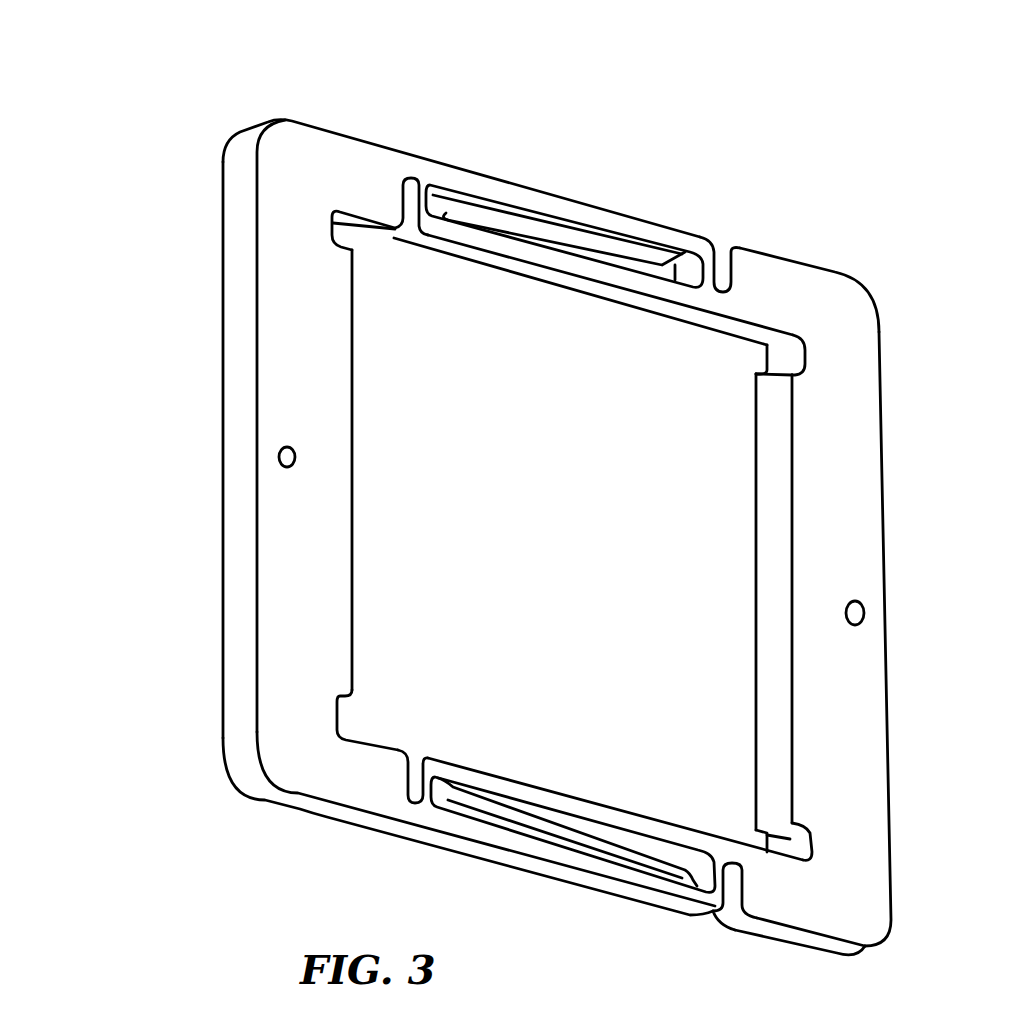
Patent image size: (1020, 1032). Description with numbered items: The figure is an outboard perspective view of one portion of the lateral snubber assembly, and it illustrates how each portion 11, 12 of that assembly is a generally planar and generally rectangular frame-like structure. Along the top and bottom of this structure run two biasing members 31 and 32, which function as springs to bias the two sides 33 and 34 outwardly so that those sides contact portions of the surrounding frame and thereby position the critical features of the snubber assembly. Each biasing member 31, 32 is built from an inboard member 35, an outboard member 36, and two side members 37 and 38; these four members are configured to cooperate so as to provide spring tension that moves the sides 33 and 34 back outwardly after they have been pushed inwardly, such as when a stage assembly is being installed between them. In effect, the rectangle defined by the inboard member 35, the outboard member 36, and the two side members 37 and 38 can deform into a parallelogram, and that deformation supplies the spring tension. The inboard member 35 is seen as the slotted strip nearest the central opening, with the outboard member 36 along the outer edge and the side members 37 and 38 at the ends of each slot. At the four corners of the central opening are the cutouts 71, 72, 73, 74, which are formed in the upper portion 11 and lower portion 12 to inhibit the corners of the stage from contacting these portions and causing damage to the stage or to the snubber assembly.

The upper portion 11 is at (150, 659).
The lower portion 12 is at (486, 819).
The biasing member 31 is at (598, 143).
The biasing member 32 is at (612, 918).
The side 33 is at (281, 340).
The side 34 is at (845, 693).
The inboard member 35 is at (598, 272).
The outboard member 36 is at (497, 190).
The side member 37 is at (420, 200).
The side member 38 is at (740, 268).
The cutout 71 is at (367, 238).
The cutout 72 is at (788, 360).
The cutout 73 is at (340, 715).
The cutout 74 is at (770, 842).